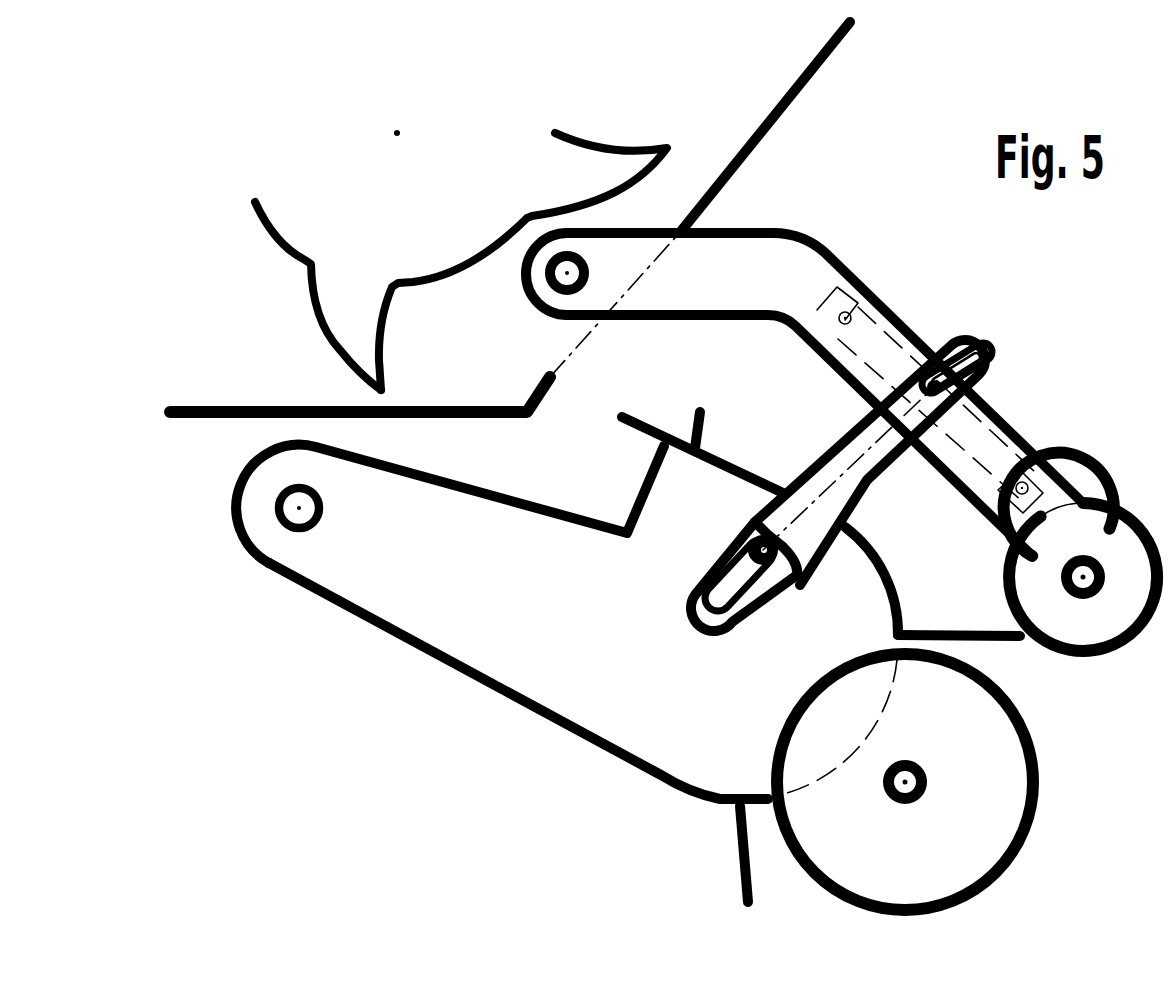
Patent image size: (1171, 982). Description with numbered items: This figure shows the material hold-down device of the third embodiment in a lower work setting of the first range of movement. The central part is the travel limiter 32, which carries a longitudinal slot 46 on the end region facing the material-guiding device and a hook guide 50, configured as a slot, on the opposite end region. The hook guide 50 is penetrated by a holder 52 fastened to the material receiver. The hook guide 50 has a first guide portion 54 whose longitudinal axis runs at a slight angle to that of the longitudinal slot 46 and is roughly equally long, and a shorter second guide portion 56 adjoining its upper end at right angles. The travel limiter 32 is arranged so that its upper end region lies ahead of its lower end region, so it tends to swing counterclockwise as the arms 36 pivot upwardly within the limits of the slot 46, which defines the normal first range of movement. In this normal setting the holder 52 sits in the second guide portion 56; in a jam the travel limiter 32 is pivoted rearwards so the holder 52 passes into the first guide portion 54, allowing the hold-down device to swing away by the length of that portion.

The travel limiter 32 is at (862, 422).
The arms 36 is at (1040, 447).
The longitudinal slot 46 is at (992, 340).
The hook guide 50 is at (785, 607).
The holder 52 is at (746, 561).
The first guide portion 54 is at (744, 582).
The second guide portion 56 is at (780, 530).